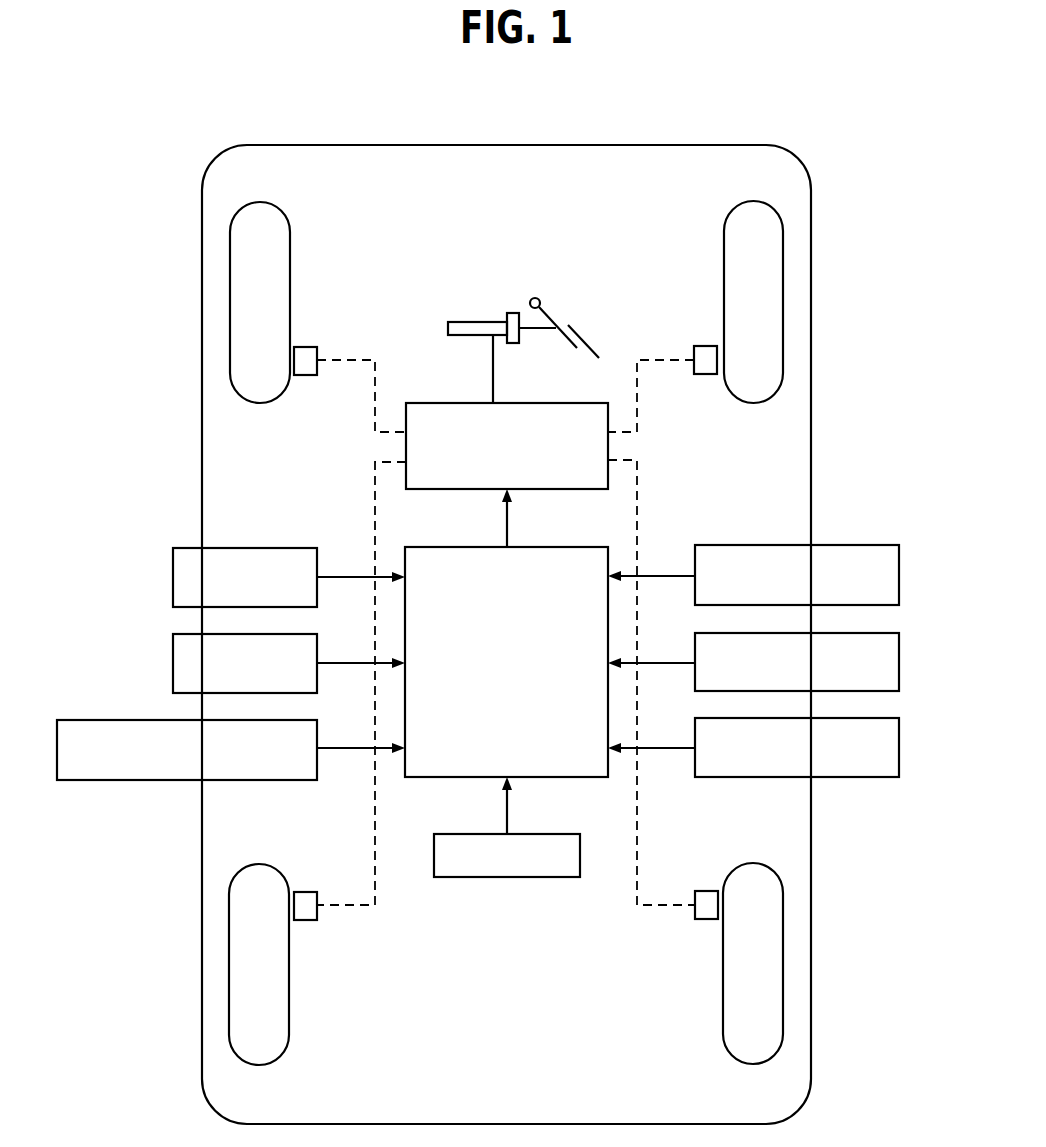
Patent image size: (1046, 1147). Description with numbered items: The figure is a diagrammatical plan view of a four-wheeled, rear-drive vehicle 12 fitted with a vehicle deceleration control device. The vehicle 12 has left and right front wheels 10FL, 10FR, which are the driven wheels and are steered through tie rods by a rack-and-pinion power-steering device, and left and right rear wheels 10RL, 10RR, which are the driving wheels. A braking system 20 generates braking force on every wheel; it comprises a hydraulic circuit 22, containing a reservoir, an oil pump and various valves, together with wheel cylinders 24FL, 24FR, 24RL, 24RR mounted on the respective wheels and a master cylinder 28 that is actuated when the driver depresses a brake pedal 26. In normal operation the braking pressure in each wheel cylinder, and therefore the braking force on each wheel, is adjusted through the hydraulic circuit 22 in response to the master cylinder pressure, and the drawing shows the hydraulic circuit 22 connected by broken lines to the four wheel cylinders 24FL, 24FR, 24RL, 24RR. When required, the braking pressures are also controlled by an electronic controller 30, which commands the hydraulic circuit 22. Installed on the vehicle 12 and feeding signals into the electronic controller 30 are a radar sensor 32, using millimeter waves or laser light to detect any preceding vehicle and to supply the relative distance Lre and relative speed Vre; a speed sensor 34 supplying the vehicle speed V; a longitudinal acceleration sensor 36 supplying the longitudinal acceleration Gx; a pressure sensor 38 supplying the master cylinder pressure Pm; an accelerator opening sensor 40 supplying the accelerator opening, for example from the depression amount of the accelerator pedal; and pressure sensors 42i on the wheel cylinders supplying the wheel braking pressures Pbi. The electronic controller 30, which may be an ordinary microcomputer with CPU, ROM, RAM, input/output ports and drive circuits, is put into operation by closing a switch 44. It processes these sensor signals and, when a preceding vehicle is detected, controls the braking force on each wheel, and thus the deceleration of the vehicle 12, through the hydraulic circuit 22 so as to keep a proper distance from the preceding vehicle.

The left front wheel 10FL is at (230, 318).
The right front wheel 10FR is at (783, 312).
The left rear wheel 10RL is at (229, 972).
The right rear wheel 10RR is at (783, 972).
The vehicle 12 is at (811, 462).
The braking system 20 is at (514, 328).
The hydraulic circuit 22 is at (518, 482).
The wheel cylinder 24FL is at (305, 375).
The wheel cylinder 24FR is at (705, 374).
The wheel cylinder 24RL is at (307, 920).
The wheel cylinder 24RR is at (708, 919).
The brake pedal 26 is at (578, 332).
The master cylinder 28 is at (465, 336).
The electronic controller 30 is at (519, 702).
The radar sensor 32 is at (261, 548).
The speed sensor 34 is at (173, 663).
The longitudinal acceleration sensor 36 is at (256, 780).
The pressure sensor 38 is at (752, 545).
The accelerator opening sensor 40 is at (899, 662).
The pressure sensors 42i is at (752, 777).
The switch 44 is at (507, 877).